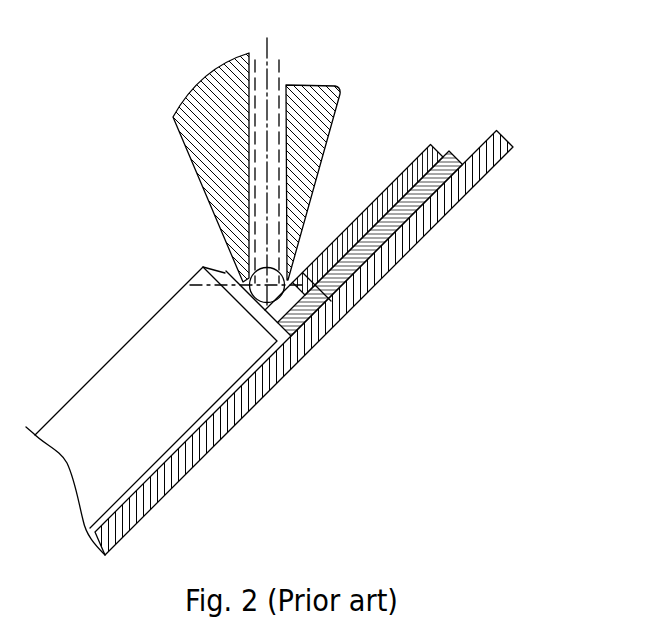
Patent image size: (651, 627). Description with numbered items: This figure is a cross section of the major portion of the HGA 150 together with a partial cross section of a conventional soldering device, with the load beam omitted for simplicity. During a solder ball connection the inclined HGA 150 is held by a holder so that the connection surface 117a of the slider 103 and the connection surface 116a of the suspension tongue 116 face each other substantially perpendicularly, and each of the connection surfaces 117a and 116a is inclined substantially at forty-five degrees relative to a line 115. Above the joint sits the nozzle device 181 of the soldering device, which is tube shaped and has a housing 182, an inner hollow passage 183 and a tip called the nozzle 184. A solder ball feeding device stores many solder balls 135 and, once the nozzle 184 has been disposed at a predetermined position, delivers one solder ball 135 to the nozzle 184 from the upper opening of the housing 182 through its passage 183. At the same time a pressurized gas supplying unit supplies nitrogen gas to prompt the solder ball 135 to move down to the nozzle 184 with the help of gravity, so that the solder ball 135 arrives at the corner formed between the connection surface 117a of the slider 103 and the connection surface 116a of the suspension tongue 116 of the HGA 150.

The slider 103 is at (153, 342).
The connection surface of the slider 117a is at (203, 267).
The HGA 150 is at (344, 343).
The suspension tongue 116 is at (310, 258).
The connection surface of the suspension tongue 116a is at (325, 268).
The nozzle 184 is at (300, 302).
The solder ball 135 is at (275, 295).
The housing 182 is at (202, 118).
The nozzle device 181 is at (375, 91).
The inner hollow passage 183 is at (262, 180).
The line 115 is at (267, 70).